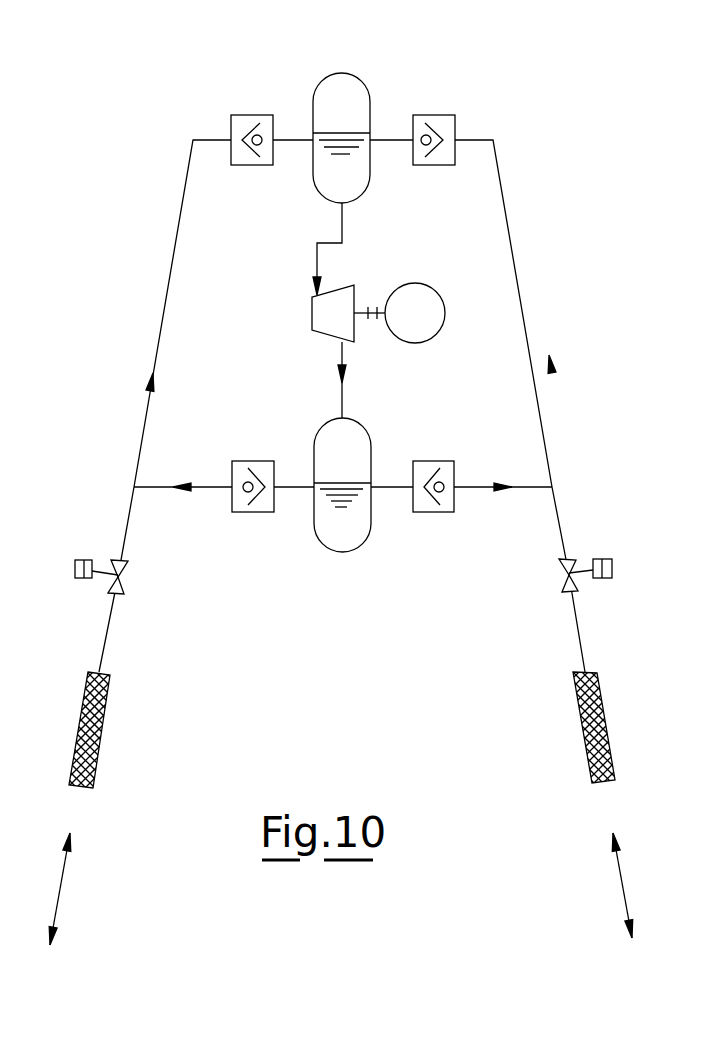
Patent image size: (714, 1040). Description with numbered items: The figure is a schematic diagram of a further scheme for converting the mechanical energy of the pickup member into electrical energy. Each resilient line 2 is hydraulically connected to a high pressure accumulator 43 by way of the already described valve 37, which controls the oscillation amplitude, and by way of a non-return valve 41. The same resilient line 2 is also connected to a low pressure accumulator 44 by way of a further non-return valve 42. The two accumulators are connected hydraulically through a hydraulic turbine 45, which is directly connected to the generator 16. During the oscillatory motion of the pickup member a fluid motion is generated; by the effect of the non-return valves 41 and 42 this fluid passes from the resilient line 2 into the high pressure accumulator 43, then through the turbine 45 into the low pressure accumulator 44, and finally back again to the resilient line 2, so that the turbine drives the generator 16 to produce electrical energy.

The resilient line 2 is at (98, 737).
The generator 16 is at (429, 344).
The valve 37 is at (124, 572).
The non-return valve 41 is at (250, 162).
The further non-return valve 42 is at (253, 462).
The high pressure accumulator 43 is at (362, 112).
The low pressure accumulator 44 is at (362, 523).
The hydraulic turbine 45 is at (347, 298).